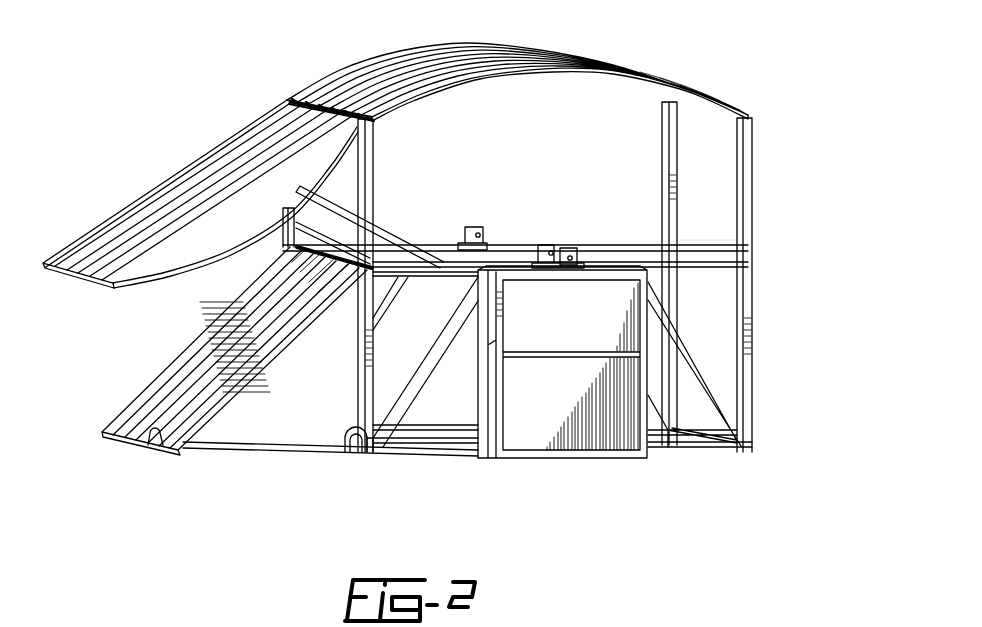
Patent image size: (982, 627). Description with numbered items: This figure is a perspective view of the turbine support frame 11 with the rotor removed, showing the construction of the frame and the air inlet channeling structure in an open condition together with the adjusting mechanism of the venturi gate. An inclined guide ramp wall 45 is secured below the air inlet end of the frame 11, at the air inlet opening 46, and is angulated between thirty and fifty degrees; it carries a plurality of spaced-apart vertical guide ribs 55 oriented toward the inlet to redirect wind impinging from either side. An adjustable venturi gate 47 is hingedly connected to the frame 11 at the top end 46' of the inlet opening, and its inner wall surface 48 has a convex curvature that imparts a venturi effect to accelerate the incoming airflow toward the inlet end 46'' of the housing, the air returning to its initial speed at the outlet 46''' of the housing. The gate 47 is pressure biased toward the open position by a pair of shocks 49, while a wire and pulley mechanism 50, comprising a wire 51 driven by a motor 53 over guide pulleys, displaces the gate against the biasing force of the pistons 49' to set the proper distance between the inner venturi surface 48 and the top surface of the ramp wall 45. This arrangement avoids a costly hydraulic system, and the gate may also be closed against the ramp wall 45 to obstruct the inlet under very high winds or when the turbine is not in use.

The frame 11 is at (746, 196).
The inclined guide ramp wall 45 is at (165, 398).
The air inlet opening 46 is at (205, 299).
The top end of the air inlet end 46' is at (517, 88).
The inlet end of the housing 46'' is at (284, 115).
The outlet of the housing 46''' is at (752, 246).
The adjustable venturi gate 47 is at (140, 212).
The inner wall surface 48 is at (166, 280).
The shocks 49 is at (503, 221).
The pistons 49' is at (370, 208).
The wire and pulley mechanism 50 is at (332, 432).
The wire 51 is at (303, 252).
The motor 53 is at (362, 452).
The vertical guide ribs 55 is at (163, 442).